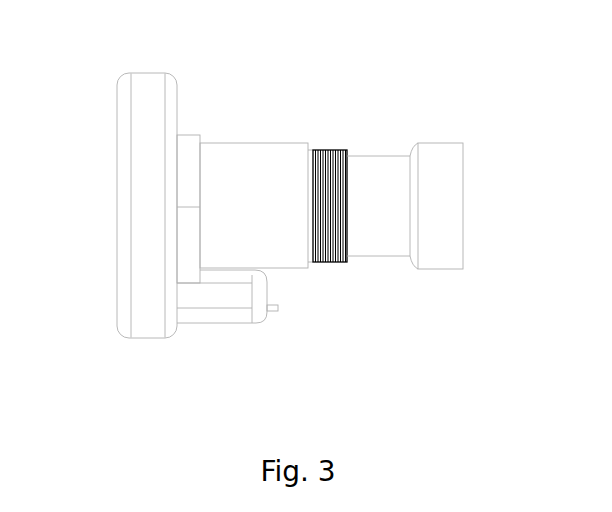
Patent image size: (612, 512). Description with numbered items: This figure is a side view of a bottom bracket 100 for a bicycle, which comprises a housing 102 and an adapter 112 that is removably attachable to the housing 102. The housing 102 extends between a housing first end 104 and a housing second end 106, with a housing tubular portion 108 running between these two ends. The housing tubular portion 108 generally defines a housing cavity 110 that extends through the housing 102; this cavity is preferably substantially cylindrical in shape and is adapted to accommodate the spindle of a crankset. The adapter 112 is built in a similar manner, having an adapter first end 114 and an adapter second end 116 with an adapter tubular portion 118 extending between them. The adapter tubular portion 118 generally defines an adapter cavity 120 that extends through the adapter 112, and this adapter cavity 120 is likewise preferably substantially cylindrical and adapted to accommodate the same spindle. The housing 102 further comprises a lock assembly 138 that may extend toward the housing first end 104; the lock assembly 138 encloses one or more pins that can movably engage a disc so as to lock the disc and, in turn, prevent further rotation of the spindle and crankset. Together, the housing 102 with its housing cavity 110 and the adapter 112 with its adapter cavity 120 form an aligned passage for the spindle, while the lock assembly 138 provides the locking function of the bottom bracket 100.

The bottom bracket 100 is at (184, 372).
The housing 102 is at (222, 117).
The housing first end 104 is at (306, 137).
The housing second end 106 is at (117, 70).
The housing tubular portion 108 is at (266, 216).
The housing cavity 110 is at (92, 207).
The adapter 112 is at (397, 128).
The adapter first end 114 is at (462, 278).
The adapter second end 116 is at (311, 280).
The adapter tubular portion 118 is at (398, 216).
The adapter cavity 120 is at (494, 207).
The lock assembly 138 is at (226, 318).